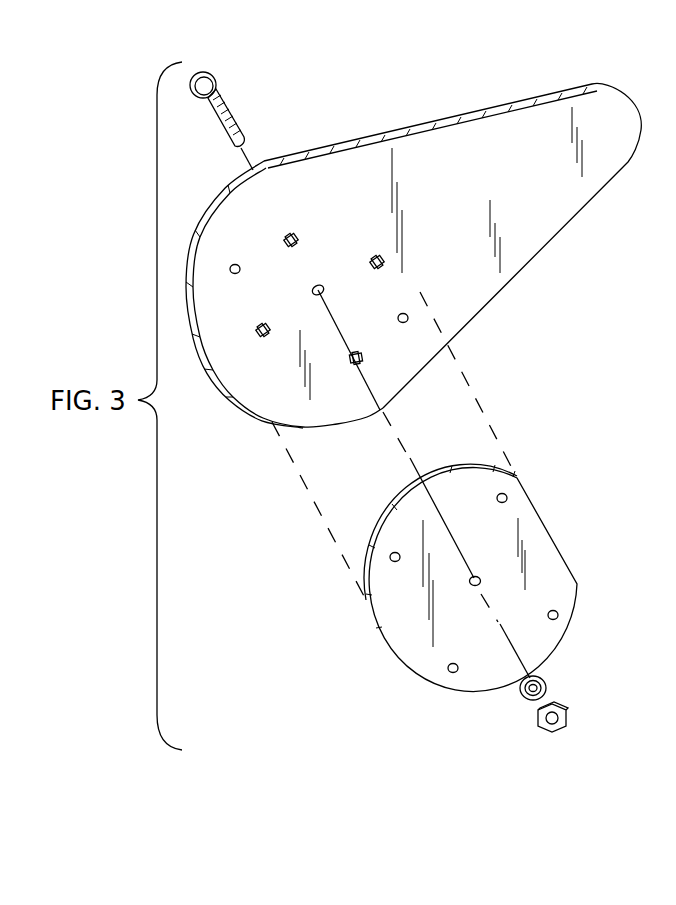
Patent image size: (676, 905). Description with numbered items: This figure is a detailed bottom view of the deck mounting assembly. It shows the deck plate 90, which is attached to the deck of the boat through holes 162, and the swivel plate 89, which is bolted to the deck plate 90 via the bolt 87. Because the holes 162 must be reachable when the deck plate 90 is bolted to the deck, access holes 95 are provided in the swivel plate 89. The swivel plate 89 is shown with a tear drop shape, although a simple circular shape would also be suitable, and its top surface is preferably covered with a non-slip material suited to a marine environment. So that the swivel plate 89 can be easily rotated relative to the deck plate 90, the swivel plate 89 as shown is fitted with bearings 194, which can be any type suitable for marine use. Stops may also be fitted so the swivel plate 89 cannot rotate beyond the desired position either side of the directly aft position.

The bolt 87 is at (228, 104).
The swivel plate 89 is at (407, 128).
The deck plate 90 is at (537, 545).
The access holes 95 is at (232, 265).
The holes 162 is at (508, 498).
The bearings 194 is at (380, 256).